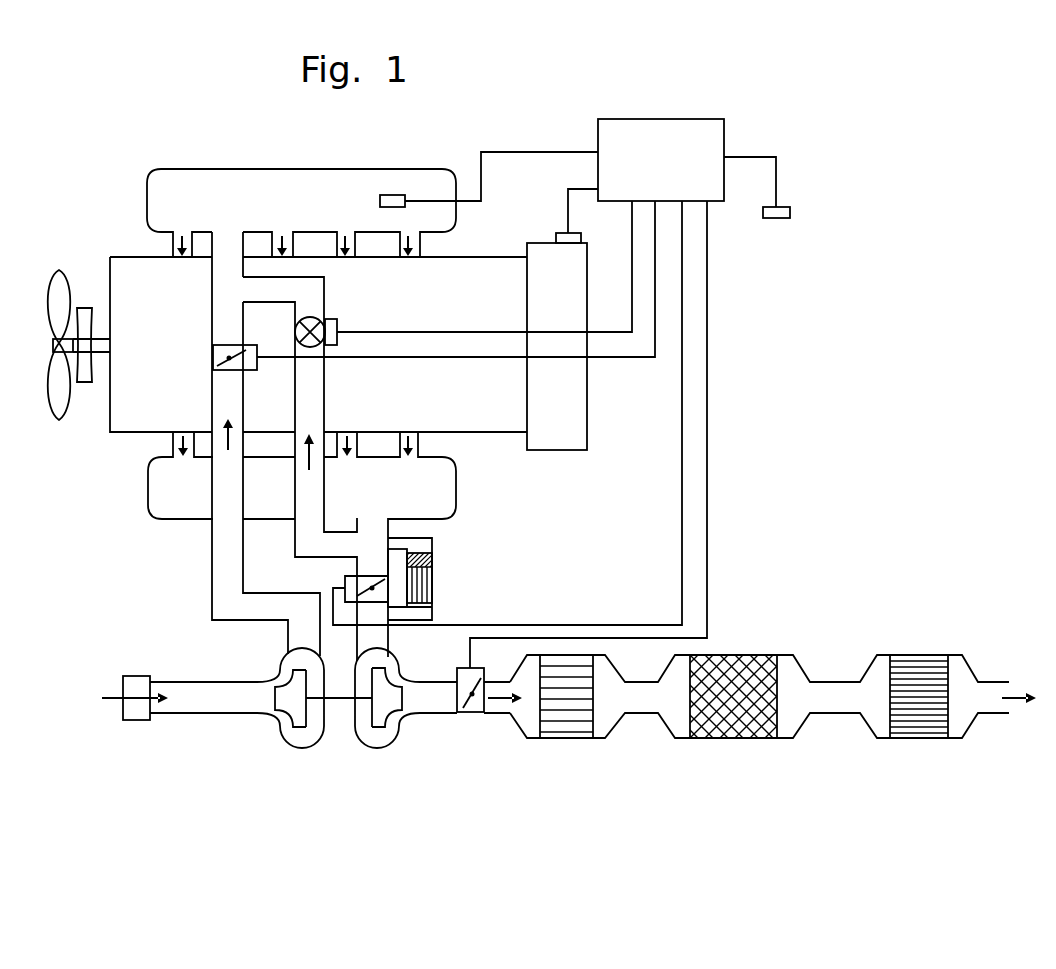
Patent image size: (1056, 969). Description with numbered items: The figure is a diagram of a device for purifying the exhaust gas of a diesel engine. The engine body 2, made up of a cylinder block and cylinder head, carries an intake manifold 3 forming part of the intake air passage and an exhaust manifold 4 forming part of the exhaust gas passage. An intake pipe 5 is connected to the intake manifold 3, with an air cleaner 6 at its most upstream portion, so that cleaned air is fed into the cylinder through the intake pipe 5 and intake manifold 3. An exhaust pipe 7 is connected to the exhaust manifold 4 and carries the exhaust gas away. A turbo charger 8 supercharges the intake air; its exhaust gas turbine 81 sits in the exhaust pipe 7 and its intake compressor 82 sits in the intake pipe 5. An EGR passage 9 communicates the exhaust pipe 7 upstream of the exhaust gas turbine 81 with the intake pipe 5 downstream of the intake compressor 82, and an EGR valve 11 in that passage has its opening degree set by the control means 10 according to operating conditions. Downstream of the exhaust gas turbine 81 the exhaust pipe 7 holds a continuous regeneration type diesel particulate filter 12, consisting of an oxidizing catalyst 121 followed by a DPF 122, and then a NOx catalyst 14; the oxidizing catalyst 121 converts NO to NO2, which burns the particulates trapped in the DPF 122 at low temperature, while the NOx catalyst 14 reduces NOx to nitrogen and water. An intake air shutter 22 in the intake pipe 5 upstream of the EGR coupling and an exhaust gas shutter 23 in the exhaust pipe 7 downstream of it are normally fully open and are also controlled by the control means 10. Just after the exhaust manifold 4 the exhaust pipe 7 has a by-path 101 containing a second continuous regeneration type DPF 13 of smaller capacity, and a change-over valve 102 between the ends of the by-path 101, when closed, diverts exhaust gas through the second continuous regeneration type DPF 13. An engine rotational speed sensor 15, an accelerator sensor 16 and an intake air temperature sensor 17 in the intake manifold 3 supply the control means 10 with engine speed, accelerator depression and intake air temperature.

The engine body 2 is at (110, 415).
The intake manifold 3 is at (147, 195).
The exhaust manifold 4 is at (161, 520).
The intake pipe 5 is at (215, 395).
The air cleaner 6 is at (134, 722).
The exhaust pipe 7 is at (390, 647).
The turbo charger 8 is at (346, 730).
The exhaust gas turbine 81 is at (397, 735).
The intake compressor 82 is at (278, 722).
The EGR passage 9 is at (327, 405).
The control means 10 is at (716, 203).
The EGR valve 11 is at (340, 330).
The continuous regeneration type diesel particulate filter 12 is at (773, 766).
The oxidizing catalyst 121 is at (575, 740).
The DPF 122 is at (757, 740).
The NOx catalyst 14 is at (922, 733).
The second continuous regeneration type DPF 13 is at (468, 429).
The by-path 101 is at (415, 545).
The change-over valve 102 is at (345, 587).
The engine rotational speed sensor 15 is at (556, 237).
The accelerator sensor 16 is at (780, 219).
The intake air temperature sensor 17 is at (380, 201).
The intake air shutter 22 is at (213, 352).
The exhaust gas shutter 23 is at (468, 715).